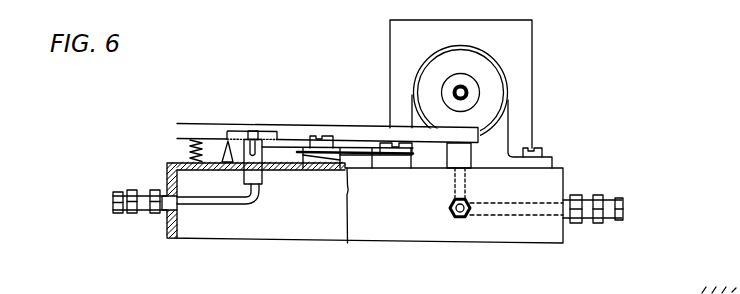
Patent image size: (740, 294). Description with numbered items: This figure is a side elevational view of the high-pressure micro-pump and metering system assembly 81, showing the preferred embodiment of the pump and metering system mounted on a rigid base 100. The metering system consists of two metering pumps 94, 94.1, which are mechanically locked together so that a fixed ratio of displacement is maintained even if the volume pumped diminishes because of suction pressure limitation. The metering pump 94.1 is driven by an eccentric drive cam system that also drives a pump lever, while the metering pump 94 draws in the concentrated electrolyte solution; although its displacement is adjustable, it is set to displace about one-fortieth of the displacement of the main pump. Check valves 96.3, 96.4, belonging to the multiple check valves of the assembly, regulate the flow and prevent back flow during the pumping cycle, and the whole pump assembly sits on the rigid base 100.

The rigid base 100 is at (297, 243).
The high-pressure micro-pump and metering system assembly 81 is at (413, 213).
The metering pump 94 is at (266, 157).
The metering pump 94.1 is at (465, 185).
The check valve 96.3 is at (460, 218).
The check valve 96.4 is at (149, 195).